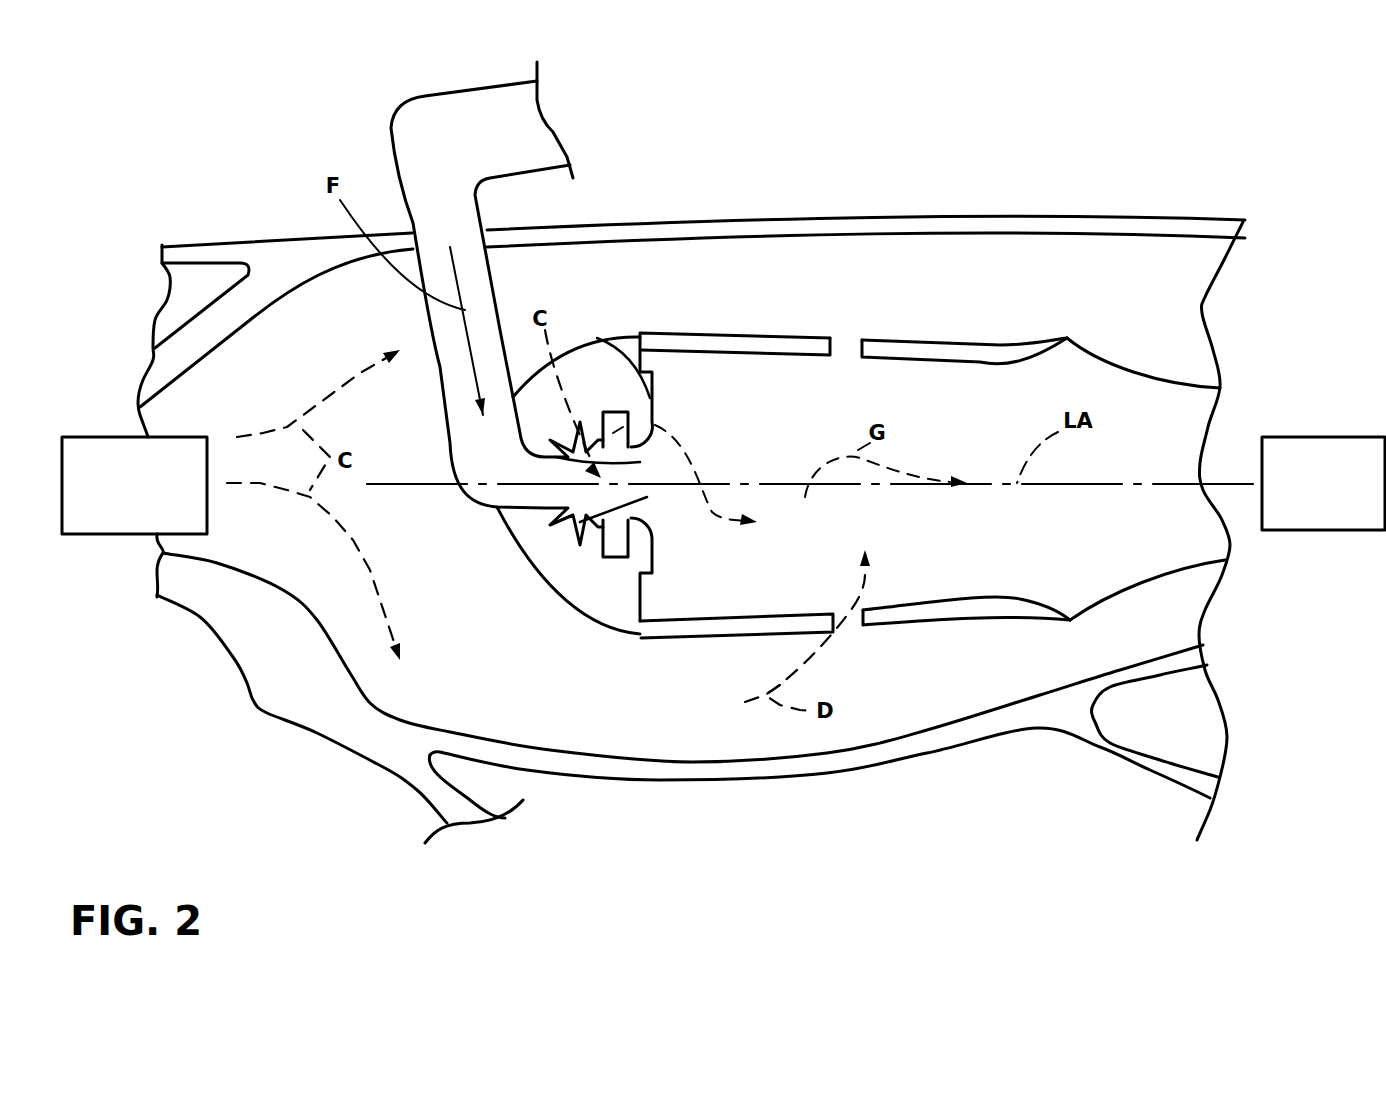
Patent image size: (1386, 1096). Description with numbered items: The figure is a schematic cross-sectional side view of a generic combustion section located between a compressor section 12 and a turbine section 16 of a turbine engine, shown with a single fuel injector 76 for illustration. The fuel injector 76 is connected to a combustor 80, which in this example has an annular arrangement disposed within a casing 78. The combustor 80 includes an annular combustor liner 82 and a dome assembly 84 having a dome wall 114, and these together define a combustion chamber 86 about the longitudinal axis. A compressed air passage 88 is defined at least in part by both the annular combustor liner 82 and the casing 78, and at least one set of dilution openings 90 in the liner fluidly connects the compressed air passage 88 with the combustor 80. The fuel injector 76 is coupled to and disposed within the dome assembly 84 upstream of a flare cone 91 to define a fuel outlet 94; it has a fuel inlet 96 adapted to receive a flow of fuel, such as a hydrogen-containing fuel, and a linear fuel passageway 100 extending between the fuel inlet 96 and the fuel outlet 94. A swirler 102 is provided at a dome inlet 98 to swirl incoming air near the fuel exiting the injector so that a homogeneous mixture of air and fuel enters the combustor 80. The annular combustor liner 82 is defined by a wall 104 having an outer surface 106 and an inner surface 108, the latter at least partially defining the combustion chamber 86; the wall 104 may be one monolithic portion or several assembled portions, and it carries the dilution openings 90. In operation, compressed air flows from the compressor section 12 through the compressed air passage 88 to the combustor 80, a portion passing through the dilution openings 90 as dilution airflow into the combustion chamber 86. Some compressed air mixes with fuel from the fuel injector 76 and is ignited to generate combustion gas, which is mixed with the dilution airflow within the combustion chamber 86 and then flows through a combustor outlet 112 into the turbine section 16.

The compressor section 12 is at (134, 485).
The turbine section 16 is at (1323, 483).
The fuel injector 76 is at (590, 522).
The casing 78 is at (1085, 235).
The combustor 80 is at (960, 313).
The annular combustor liner 82 is at (1000, 353).
The dome assembly 84 is at (626, 636).
The combustion chamber 86 is at (886, 473).
The compressed air passage 88 is at (707, 486).
The dilution openings 90 is at (838, 337).
The flare cone 91 is at (645, 428).
The fuel outlet 94 is at (655, 488).
The fuel inlet 96 is at (467, 130).
The dome inlet 98 is at (670, 514).
The linear fuel passageway 100 is at (483, 310).
The swirler 102 is at (620, 545).
The wall 104 is at (930, 617).
The outer surface 106 is at (973, 343).
The inner surface 108 is at (947, 360).
The combustor outlet 112 is at (1162, 400).
The dome wall 114 is at (615, 355).